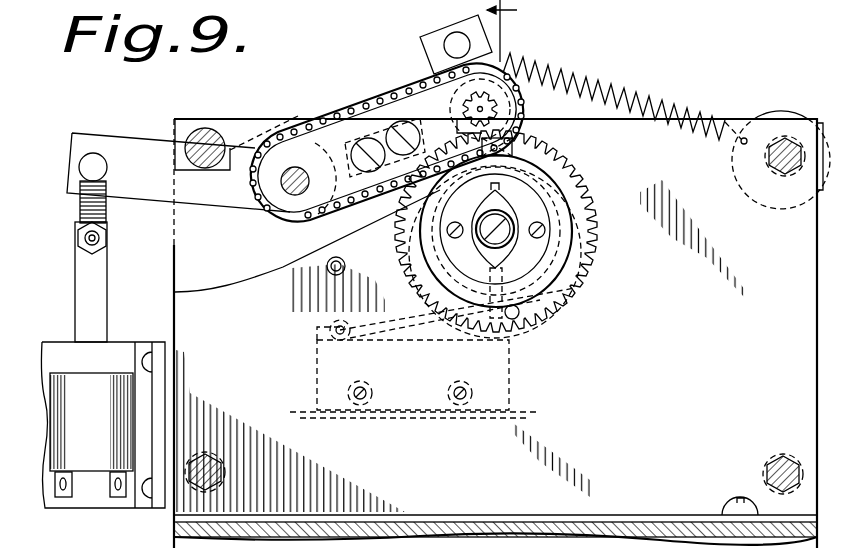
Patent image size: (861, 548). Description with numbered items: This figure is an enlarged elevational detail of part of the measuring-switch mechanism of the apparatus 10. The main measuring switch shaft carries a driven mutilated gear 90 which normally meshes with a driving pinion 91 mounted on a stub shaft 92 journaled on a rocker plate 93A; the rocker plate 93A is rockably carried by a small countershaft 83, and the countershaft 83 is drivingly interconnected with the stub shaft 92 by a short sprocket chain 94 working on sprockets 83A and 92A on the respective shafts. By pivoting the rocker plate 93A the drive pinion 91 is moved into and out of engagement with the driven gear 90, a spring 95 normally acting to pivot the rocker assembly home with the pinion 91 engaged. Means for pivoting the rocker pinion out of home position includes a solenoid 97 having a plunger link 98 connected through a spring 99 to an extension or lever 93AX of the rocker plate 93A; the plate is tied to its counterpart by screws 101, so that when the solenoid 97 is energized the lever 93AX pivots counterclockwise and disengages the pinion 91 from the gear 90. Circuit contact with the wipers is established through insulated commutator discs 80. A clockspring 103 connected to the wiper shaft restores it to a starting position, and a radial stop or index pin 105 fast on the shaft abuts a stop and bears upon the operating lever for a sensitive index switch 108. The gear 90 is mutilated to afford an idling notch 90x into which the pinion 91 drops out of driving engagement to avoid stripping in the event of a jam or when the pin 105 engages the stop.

The housing reference dimension 10 is at (513, 31).
The insulated commutator disc 80 is at (520, 222).
The small countershaft 83 is at (268, 206).
The sprocket 83A is at (312, 120).
The driven mutilated gear 90 is at (547, 162).
The idling notch 90x is at (525, 150).
The driving pinion 91 is at (510, 106).
The stub shaft 92 is at (502, 108).
The sprocket 92A is at (432, 100).
The rocker plate 93A is at (342, 140).
The lever 93AX is at (128, 150).
The short sprocket chain 94 is at (369, 121).
The spring 95 is at (580, 78).
The solenoid 97 is at (108, 412).
The plunger link 98 is at (97, 300).
The spring 99 is at (104, 210).
The screws 101 is at (392, 178).
The clockspring 103 is at (548, 322).
The radial stop or index pin 105 is at (575, 288).
The sensitive index switch 108 is at (512, 390).